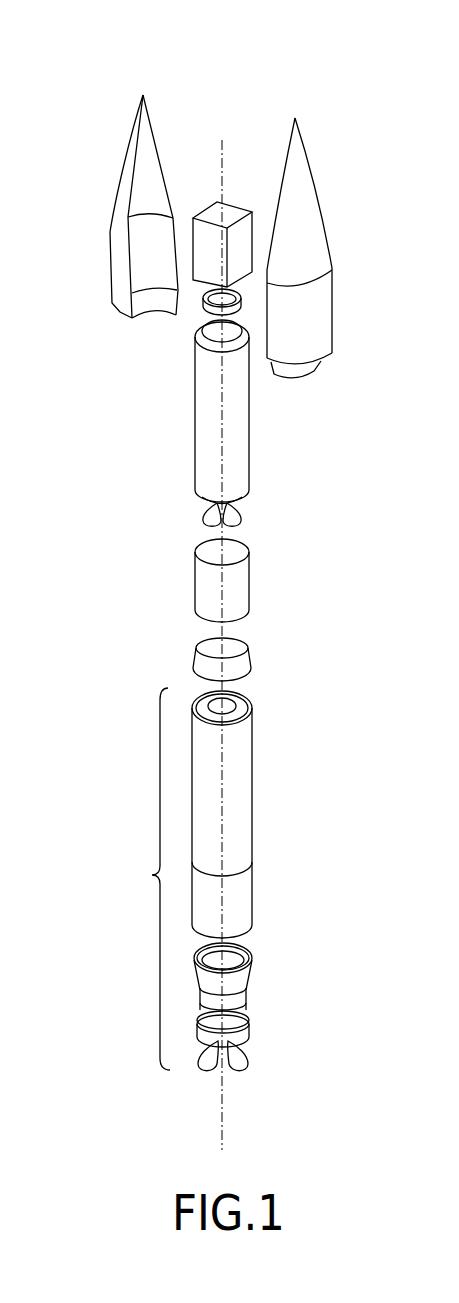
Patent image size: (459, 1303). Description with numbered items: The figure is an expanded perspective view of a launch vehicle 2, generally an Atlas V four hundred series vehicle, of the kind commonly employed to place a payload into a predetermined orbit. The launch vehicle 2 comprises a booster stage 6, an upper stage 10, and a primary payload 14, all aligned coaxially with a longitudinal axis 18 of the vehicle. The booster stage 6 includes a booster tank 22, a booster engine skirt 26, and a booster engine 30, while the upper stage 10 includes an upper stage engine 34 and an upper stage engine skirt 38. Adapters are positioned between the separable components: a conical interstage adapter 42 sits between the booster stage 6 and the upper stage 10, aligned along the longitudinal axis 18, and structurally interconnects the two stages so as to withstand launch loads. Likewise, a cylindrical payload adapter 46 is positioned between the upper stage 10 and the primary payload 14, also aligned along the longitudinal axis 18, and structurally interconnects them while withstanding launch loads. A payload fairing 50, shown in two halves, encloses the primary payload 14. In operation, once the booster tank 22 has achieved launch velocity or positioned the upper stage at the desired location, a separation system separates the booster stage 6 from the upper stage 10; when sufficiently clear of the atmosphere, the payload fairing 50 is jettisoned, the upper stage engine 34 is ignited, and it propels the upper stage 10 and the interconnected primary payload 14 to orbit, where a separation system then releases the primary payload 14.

The launch vehicle 2 is at (104, 74).
The booster stage 6 is at (148, 879).
The upper stage 10 is at (247, 416).
The primary payload 14 is at (237, 208).
The longitudinal axis 18 is at (224, 162).
The booster tank 22 is at (253, 790).
The booster engine skirt 26 is at (251, 975).
The booster engine 30 is at (252, 1028).
The upper stage engine 34 is at (243, 500).
The upper stage engine skirt 38 is at (251, 583).
The interstage adapter 42 is at (252, 657).
The payload adapter 46 is at (207, 308).
The payload fairing 50 is at (312, 170).